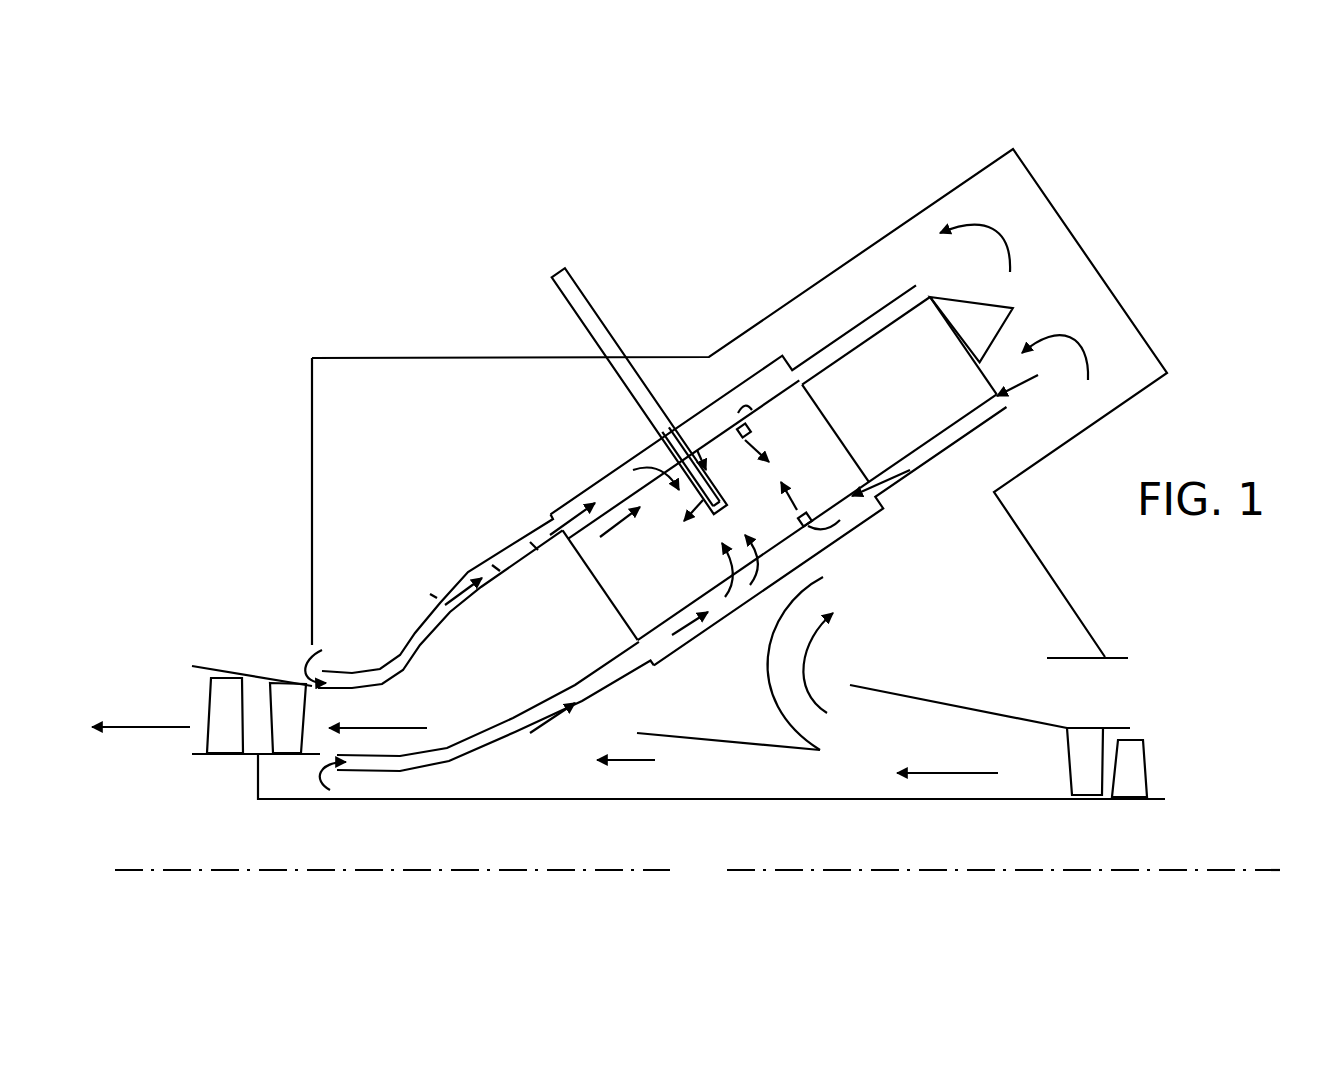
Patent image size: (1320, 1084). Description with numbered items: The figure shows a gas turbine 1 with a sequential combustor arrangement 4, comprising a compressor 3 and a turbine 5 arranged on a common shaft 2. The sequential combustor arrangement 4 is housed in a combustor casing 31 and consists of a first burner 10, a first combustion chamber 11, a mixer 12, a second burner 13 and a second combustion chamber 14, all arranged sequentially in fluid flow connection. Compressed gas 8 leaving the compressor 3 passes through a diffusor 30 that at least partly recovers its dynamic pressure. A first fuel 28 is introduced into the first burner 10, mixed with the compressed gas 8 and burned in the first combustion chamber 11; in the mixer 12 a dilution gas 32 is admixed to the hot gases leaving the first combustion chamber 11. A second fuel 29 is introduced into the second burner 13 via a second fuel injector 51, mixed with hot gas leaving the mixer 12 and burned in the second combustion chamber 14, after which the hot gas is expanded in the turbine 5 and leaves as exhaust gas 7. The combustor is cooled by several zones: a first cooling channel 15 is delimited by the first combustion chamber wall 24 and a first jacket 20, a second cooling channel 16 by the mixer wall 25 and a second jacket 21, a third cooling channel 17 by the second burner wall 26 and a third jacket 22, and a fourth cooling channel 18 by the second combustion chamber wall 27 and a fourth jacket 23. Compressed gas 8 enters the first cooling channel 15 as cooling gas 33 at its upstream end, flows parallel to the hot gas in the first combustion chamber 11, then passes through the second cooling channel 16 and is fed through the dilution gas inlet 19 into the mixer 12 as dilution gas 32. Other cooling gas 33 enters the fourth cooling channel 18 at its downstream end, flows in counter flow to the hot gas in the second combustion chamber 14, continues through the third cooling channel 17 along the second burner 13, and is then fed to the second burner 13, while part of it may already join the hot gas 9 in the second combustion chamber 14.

The gas turbine 1 is at (514, 126).
The shaft 2 is at (697, 873).
The compressor 3 is at (1133, 762).
The sequential combustor arrangement 4 is at (1256, 149).
The turbine 5 is at (225, 697).
The exhaust gas 7 is at (152, 729).
The compressed gas 8 is at (962, 772).
The hot gas 9 is at (389, 729).
The first burner 10 is at (918, 290).
The first combustion chamber 11 is at (945, 353).
The mixer 12 is at (790, 478).
The second burner 13 is at (773, 517).
The second combustion chamber 14 is at (479, 652).
The first cooling channel 15 is at (885, 320).
The second cooling channel 16 is at (772, 380).
The third cooling channel 17 is at (643, 490).
The fourth cooling channel 18 is at (497, 568).
The dilution gas inlet 19 is at (727, 398).
The first jacket 20 is at (853, 328).
The second jacket 21 is at (700, 456).
The third jacket 22 is at (600, 497).
The fourth jacket 23 is at (435, 597).
The first combustion chamber wall 24 is at (822, 372).
The mixer wall 25 is at (763, 370).
The second burner wall 26 is at (690, 478).
The second combustion chamber wall 27 is at (535, 547).
The first fuel 28 is at (1022, 299).
The second fuel 29 is at (563, 273).
The diffusor 30 is at (882, 731).
The combustor casing 31 is at (410, 357).
The dilution gas 32 is at (806, 510).
The cooling gas 33 is at (895, 473).
The second fuel injector 51 is at (588, 293).